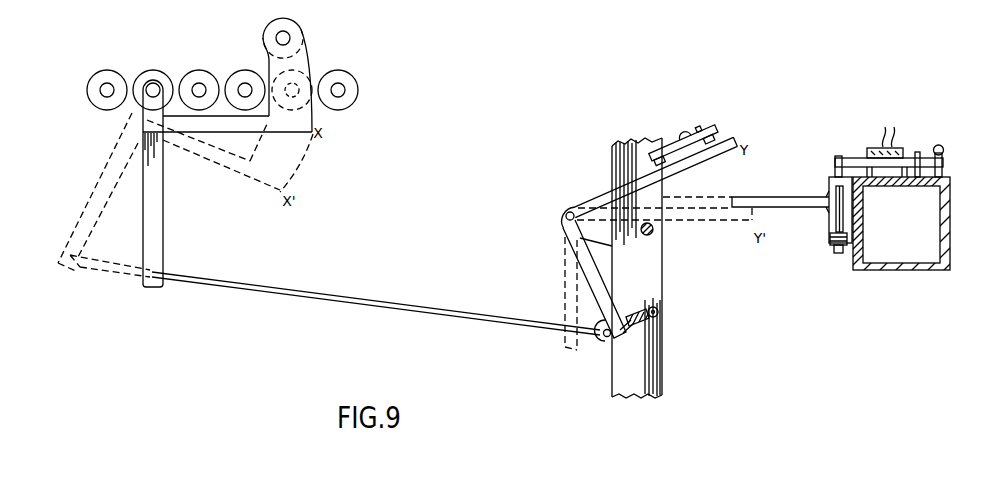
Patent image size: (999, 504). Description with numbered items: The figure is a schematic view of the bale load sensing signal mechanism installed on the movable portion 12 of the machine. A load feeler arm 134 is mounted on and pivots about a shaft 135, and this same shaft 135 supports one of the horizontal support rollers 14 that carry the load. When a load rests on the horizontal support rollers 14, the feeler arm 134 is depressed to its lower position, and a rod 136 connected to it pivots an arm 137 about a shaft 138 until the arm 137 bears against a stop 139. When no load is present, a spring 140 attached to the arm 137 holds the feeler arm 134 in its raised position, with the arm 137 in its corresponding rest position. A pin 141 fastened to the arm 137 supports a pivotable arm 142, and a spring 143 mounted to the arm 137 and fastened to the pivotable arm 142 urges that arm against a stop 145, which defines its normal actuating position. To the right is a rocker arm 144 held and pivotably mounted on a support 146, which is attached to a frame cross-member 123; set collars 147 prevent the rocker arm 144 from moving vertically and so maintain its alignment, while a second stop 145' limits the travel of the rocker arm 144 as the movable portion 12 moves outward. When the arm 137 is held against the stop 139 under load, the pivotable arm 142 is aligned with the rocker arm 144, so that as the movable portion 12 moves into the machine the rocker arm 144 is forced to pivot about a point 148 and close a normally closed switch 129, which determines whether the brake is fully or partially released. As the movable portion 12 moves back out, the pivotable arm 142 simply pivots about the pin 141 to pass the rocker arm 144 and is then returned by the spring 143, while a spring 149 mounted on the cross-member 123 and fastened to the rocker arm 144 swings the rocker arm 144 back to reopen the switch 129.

The movable portion 12 is at (647, 373).
The horizontal support rollers 14 is at (234, 81).
The frame cross-member 123 is at (950, 245).
The normally closed switch 129 is at (900, 148).
The load feeler arm 134 is at (300, 65).
The shaft 135 is at (157, 83).
The rod 136 is at (333, 295).
The arm 137 is at (703, 160).
The shaft 138 is at (566, 219).
The stop 139 is at (655, 235).
The spring 140 is at (658, 318).
The pin 141 is at (650, 166).
The pivotable arm 142 is at (722, 128).
The spring 143 is at (688, 131).
The rocker arm 144 is at (892, 161).
The stop 145 is at (700, 110).
The stop 145' is at (939, 145).
The support 146 is at (828, 180).
The set collars 147 is at (832, 233).
The point 148 is at (840, 156).
The spring 149 is at (943, 152).